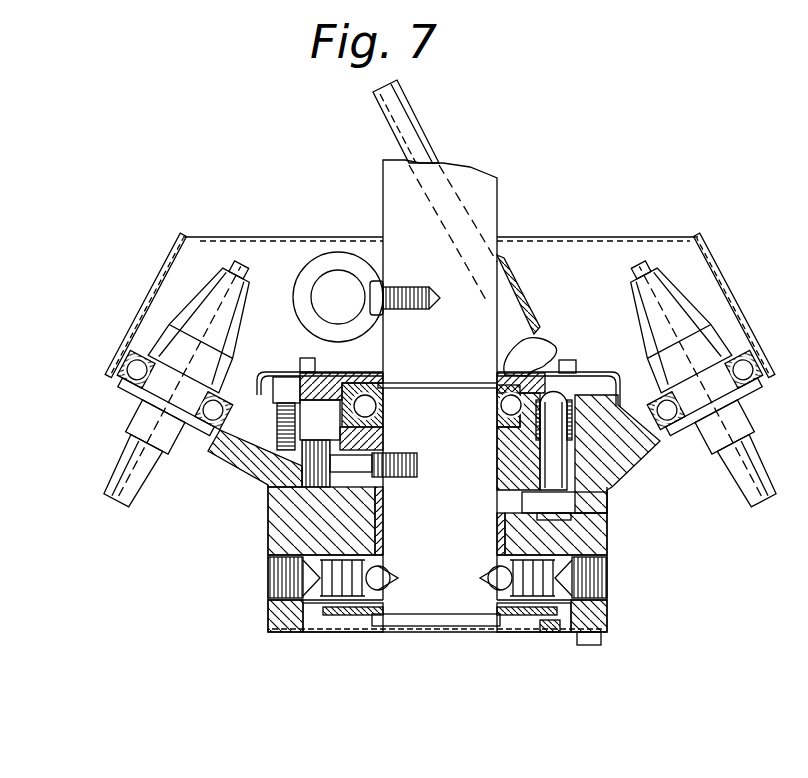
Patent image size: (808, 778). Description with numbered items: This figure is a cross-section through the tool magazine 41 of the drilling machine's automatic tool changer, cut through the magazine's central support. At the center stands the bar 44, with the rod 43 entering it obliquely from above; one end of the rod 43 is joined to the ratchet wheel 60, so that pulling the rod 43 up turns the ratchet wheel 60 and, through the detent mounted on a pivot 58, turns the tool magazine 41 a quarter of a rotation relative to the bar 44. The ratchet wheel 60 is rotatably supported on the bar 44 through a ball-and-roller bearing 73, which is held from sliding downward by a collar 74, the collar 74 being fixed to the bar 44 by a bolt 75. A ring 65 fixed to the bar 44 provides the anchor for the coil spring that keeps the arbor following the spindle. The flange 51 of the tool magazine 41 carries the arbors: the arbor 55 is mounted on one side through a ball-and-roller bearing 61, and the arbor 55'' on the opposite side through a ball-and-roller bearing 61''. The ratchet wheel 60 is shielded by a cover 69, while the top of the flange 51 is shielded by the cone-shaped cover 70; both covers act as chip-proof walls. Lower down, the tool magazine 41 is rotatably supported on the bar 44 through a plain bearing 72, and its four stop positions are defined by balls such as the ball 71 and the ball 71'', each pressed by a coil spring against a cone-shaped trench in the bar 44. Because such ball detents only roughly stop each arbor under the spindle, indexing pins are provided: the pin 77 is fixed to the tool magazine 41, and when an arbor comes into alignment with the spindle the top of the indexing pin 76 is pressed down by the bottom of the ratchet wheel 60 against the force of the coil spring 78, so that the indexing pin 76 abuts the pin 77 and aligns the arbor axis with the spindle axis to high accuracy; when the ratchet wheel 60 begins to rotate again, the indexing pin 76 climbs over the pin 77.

The tool magazine 41 is at (262, 548).
The rod 43 is at (413, 122).
The bar 44 is at (483, 202).
The flange 51 is at (624, 450).
The arbor 55 is at (697, 383).
The arbor 55'' is at (181, 383).
The pivot 58 is at (288, 365).
The ratchet wheel 60 is at (507, 373).
The ball-and-roller bearing 61 is at (755, 337).
The ball-and-roller bearing 61'' is at (106, 369).
The ring 65 is at (341, 258).
The cover 69 is at (255, 386).
The cone-shaped cover 70 is at (155, 286).
The ball 71 is at (525, 642).
The ball 71'' is at (354, 642).
The plain bearing 72 is at (474, 614).
The ball-and-roller bearing 73 is at (372, 386).
The collar 74 is at (372, 470).
The bolt 75 is at (310, 472).
The indexing pin 76 is at (604, 498).
The pin 77 is at (586, 506).
The coil spring 78 is at (654, 450).